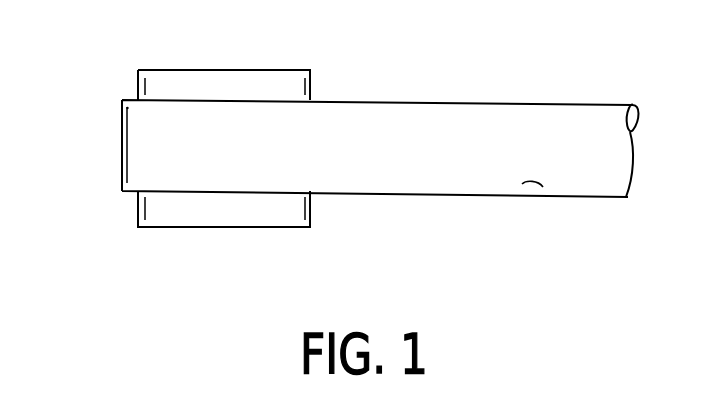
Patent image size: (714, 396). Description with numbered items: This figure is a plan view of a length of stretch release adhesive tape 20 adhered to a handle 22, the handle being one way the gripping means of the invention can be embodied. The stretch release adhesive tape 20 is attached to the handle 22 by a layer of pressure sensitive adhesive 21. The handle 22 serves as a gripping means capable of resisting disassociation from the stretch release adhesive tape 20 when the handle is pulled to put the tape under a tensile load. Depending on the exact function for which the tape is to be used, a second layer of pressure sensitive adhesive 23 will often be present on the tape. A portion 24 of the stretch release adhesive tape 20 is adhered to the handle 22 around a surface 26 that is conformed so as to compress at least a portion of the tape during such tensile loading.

The stretch release adhesive tape 20 is at (453, 115).
The layer of pressure sensitive adhesive 21 is at (545, 195).
The handle 22 is at (232, 78).
The second layer of pressure sensitive adhesive 23 is at (578, 123).
The portion 24 is at (120, 138).
The surface 26 is at (137, 208).